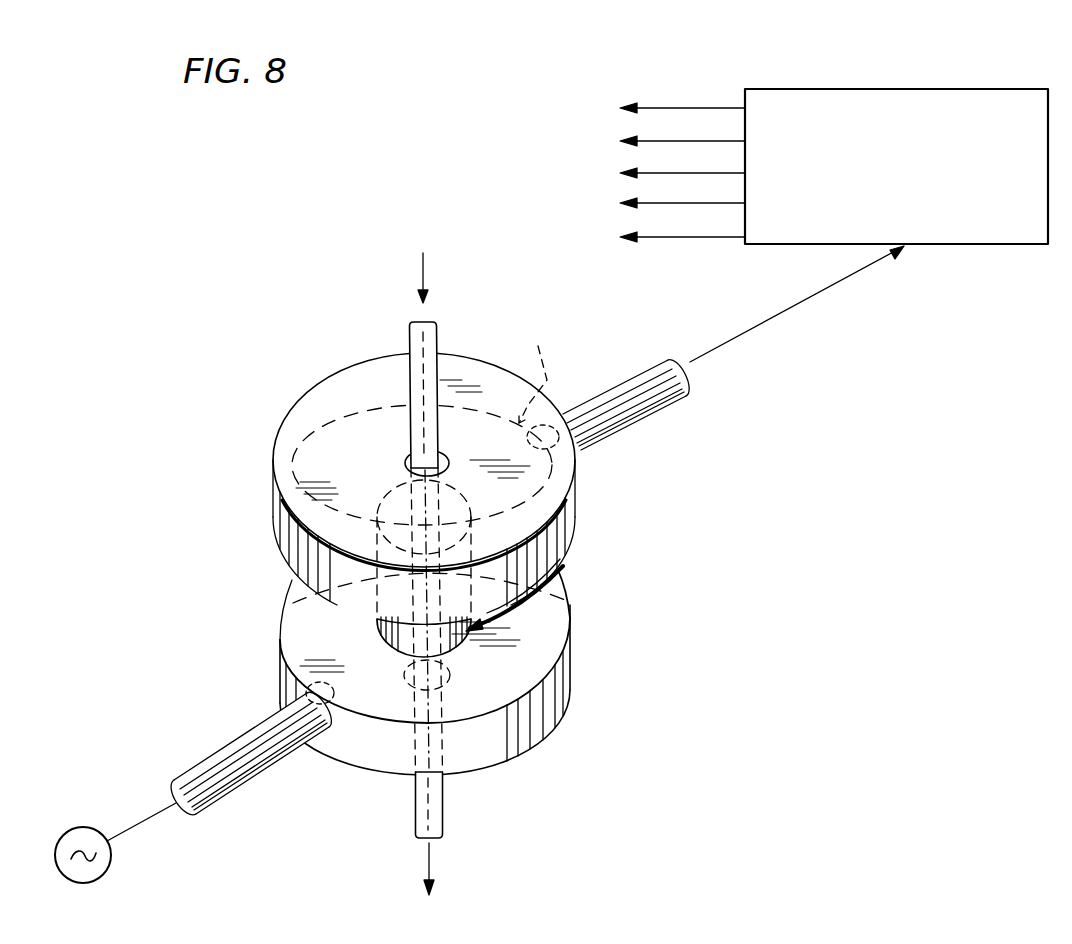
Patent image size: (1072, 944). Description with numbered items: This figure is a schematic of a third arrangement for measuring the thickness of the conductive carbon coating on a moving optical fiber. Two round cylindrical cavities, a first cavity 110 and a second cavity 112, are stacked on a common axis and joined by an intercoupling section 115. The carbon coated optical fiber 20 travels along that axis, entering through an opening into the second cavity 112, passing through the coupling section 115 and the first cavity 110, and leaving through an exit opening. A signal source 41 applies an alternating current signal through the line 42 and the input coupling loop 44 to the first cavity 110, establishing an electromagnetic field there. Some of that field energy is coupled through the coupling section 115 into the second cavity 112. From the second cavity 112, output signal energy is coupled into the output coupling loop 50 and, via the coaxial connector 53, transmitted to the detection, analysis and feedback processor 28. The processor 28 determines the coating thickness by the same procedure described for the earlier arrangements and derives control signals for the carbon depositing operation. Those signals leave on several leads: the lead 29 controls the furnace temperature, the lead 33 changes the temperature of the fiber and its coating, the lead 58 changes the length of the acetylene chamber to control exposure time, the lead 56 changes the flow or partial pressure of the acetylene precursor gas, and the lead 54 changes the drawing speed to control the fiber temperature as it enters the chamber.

The optical fiber 20 is at (438, 338).
The detection, analysis and feedback processor 28 is at (984, 89).
The lead 29 is at (660, 107).
The lead 33 is at (683, 141).
The lead 58 is at (693, 173).
The lead 56 is at (697, 203).
The lead 54 is at (700, 239).
The signal source 41 is at (92, 827).
The line 42 is at (150, 818).
The input coupling loop 44 is at (287, 690).
The output coupling loop 50 is at (539, 385).
The coaxial connector 53 is at (601, 394).
The first cavity 110 is at (373, 752).
The second cavity 112 is at (296, 437).
The intercoupling section 115 is at (560, 559).